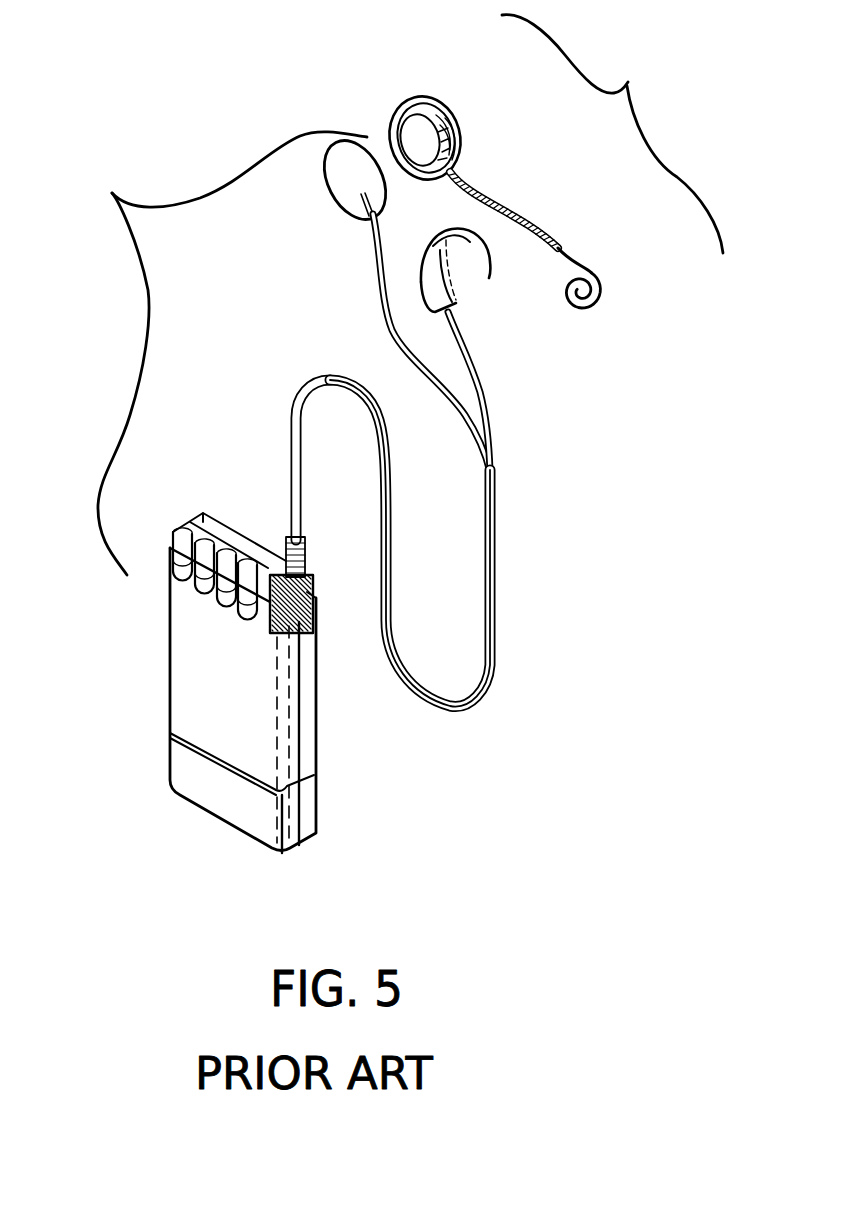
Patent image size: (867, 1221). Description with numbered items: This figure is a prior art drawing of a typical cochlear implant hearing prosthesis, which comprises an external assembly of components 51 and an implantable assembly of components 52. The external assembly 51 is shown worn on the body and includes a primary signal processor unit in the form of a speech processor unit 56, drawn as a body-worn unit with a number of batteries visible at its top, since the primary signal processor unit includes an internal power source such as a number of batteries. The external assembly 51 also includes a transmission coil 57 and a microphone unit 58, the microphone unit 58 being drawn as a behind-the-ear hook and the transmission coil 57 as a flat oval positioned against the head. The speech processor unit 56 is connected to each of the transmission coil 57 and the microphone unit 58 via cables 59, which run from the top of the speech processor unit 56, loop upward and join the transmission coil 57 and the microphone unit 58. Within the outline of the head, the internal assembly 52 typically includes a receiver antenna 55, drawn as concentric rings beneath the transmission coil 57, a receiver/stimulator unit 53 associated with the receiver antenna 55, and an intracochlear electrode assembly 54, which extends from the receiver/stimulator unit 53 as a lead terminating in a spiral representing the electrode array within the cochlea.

The external assembly of components 51 is at (219, 353).
The implantable assembly of components 52 is at (612, 134).
The receiver/stimulator unit 53 is at (462, 116).
The intracochlear electrode assembly 54 is at (610, 293).
The receiver antenna 55 is at (408, 90).
The speech processor unit 56 is at (243, 683).
The transmission coil 57 is at (325, 200).
The microphone unit 58 is at (480, 291).
The cables 59 is at (496, 552).